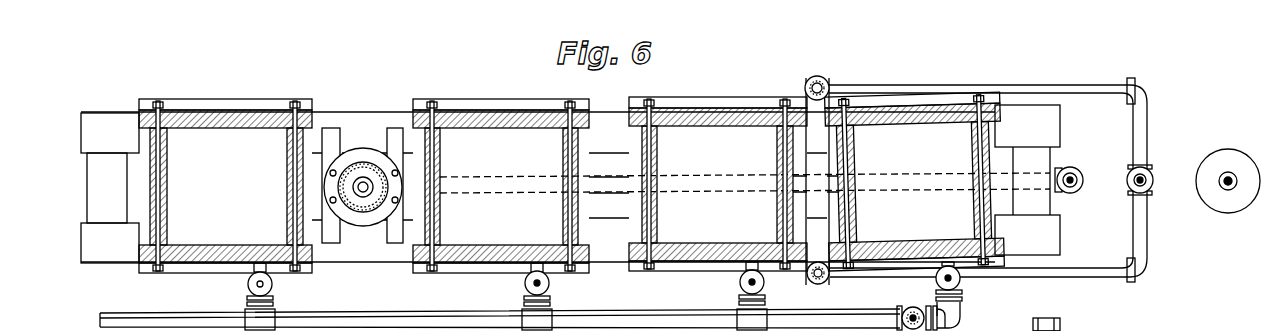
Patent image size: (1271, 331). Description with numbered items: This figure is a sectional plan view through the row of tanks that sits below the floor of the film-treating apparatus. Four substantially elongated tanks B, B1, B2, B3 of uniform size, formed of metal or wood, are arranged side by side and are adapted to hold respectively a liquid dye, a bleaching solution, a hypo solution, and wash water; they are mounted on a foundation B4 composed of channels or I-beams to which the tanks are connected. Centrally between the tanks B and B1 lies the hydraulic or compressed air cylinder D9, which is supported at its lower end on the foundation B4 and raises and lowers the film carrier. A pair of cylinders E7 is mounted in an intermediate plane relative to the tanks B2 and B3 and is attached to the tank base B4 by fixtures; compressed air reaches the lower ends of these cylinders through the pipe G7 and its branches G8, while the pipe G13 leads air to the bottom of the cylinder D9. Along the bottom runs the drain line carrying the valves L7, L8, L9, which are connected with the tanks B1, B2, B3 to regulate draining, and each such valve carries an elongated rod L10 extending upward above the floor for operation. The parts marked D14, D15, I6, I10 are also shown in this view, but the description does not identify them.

The tank B is at (243, 112).
The tank B1 is at (470, 115).
The tank B2 is at (698, 113).
The wash tank B3 is at (906, 115).
The foundation B4 is at (600, 225).
The hydraulic or compressed air cylinder D9 is at (372, 208).
The pipe fitting D14 is at (1060, 318).
The pipe fitting D15 is at (1098, 330).
The hydraulic or compressed air cylinder E7 is at (829, 88).
The pipe G7 is at (1128, 175).
The branch G8 is at (1018, 90).
The pipe G13 is at (1071, 168).
The valve I6 is at (255, 287).
The valve coupling I10 is at (272, 284).
The valve L7 is at (552, 296).
The valve L8 is at (738, 294).
The valve L9 is at (962, 297).
The elongated rod L10 is at (525, 282).